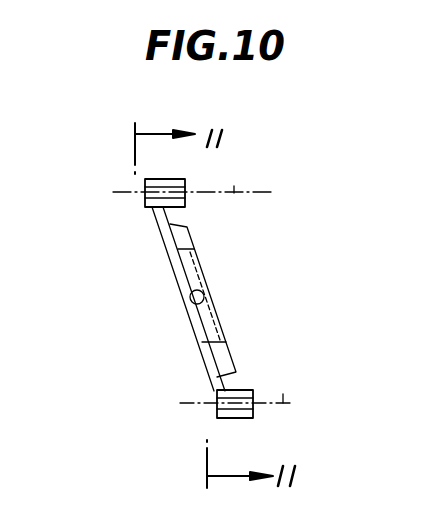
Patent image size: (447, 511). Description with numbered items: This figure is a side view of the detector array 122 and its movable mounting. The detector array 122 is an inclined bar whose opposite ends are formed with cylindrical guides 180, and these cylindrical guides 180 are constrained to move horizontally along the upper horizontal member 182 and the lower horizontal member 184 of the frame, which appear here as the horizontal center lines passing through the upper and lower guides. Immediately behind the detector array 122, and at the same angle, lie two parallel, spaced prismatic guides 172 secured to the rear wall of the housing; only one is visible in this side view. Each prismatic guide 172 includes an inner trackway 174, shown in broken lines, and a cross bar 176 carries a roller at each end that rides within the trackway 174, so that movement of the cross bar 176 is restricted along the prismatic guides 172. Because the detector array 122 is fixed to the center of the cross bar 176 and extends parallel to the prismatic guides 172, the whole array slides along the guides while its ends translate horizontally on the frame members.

The detector array 122 is at (170, 266).
The prismatic guide 172 is at (175, 233).
The inner trackway 174 is at (197, 265).
The cross bar 176 is at (189, 303).
The cylindrical guide 180 is at (157, 179).
The upper horizontal member 182 is at (234, 193).
The lower horizontal member 184 is at (283, 403).